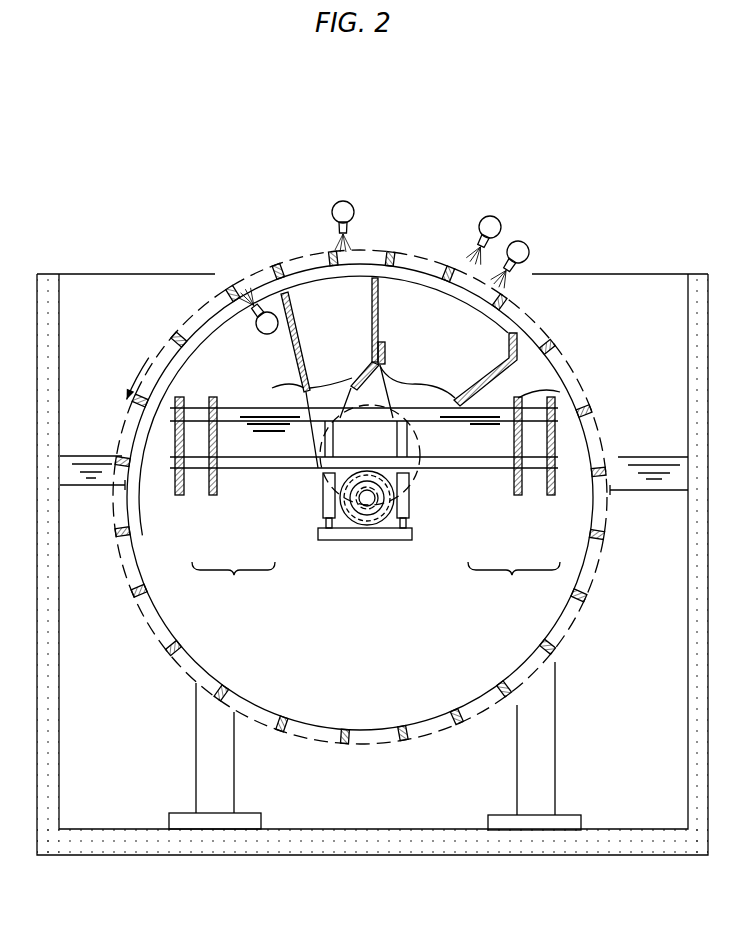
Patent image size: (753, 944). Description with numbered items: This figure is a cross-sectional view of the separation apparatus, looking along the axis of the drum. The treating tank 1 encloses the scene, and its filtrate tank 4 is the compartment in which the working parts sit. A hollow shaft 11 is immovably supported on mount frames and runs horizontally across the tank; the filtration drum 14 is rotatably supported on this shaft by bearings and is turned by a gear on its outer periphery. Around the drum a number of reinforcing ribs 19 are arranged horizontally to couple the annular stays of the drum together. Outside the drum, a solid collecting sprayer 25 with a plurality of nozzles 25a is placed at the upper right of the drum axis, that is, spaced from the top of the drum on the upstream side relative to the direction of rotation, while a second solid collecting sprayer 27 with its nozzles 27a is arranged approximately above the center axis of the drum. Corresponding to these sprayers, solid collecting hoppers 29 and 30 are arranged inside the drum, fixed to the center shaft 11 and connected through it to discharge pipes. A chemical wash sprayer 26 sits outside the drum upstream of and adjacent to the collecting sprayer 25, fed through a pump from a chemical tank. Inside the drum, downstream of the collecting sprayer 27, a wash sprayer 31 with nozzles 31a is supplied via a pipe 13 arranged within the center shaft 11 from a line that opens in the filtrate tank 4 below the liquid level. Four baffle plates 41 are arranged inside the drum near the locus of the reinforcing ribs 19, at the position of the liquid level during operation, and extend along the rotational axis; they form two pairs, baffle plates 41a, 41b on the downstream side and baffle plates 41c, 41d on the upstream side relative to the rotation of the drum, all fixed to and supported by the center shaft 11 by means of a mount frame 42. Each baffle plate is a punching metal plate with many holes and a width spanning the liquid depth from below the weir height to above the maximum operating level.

The treating tank 1 is at (624, 263).
The filtrate tank 4 is at (625, 818).
The hollow shaft 11 is at (390, 523).
The pipe 13 is at (365, 532).
The filtration drum 14 is at (296, 245).
The reinforcing ribs 19 is at (150, 594).
The solid collecting sprayer 25 is at (494, 216).
The nozzles 25a is at (481, 238).
The chemical wash sprayer 26 is at (528, 247).
The solid collecting sprayer 27 is at (343, 201).
The nozzles 27a is at (337, 226).
The solid collecting hopper 29 is at (485, 400).
The solid collecting hopper 30 is at (297, 378).
The wash sprayer 31 is at (263, 334).
The nozzles 31a is at (223, 294).
The baffle plates 41 is at (376, 579).
The baffle plate 41a is at (179, 498).
The baffle plate 41b is at (212, 498).
The baffle plate 41c is at (517, 498).
The baffle plate 41d is at (551, 498).
The mount frame 42 is at (449, 468).